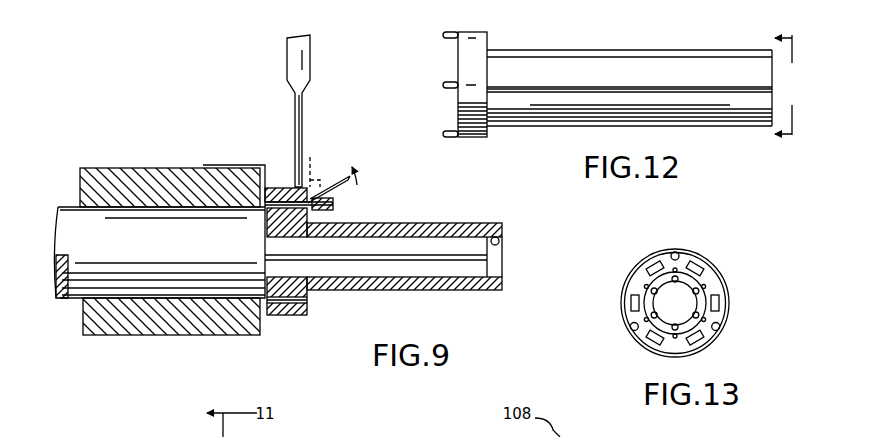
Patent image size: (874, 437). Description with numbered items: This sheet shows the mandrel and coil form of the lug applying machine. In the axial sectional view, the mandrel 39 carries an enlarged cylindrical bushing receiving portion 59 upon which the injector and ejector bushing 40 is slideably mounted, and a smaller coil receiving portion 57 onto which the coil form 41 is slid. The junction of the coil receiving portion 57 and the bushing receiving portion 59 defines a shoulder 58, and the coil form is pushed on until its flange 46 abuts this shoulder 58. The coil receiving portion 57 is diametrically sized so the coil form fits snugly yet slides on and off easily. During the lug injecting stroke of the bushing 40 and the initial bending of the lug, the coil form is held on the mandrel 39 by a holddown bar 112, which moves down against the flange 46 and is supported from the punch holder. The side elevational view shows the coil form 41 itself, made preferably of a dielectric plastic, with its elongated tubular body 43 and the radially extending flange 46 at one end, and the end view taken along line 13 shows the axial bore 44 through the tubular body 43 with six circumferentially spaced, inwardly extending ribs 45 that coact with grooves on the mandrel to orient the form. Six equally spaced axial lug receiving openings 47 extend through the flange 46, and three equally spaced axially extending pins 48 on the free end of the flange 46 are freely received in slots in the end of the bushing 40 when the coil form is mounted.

In FIG. 9, the mandrel 39 is at (82, 283).
In FIG. 9, the injector and ejector bushing 40 is at (127, 323).
In FIG. 9, the coil form 41 is at (450, 222).
In FIG. 12, the coil form 41 is at (640, 50).
In FIG. 9, the tubular body 43 is at (480, 226).
In FIG. 12, the tubular body 43 is at (700, 65).
In FIG. 9, the axial bore 44 is at (499, 243).
In FIG. 13, the axial bore 44 is at (697, 288).
In FIG. 13, the ribs 45 is at (697, 306).
In FIG. 9, the flange 46 is at (303, 313).
In FIG. 12, the flange 46 is at (478, 32).
In FIG. 13, the flange 46 is at (685, 257).
In FIG. 9, the lug receiving openings 47 is at (307, 300).
In FIG. 13, the lug receiving openings 47 is at (692, 265).
In FIG. 12, the pins 48 is at (443, 85).
In FIG. 13, the pins 48 is at (719, 331).
In FIG. 9, the coil receiving portion 57 is at (462, 262).
In FIG. 9, the shoulder 58 is at (278, 307).
In FIG. 9, the bushing receiving portion 59 is at (227, 213).
In FIG. 9, the holddown bar 112 is at (310, 63).
In FIG. 12, the section line 13- 13 is at (800, 134).